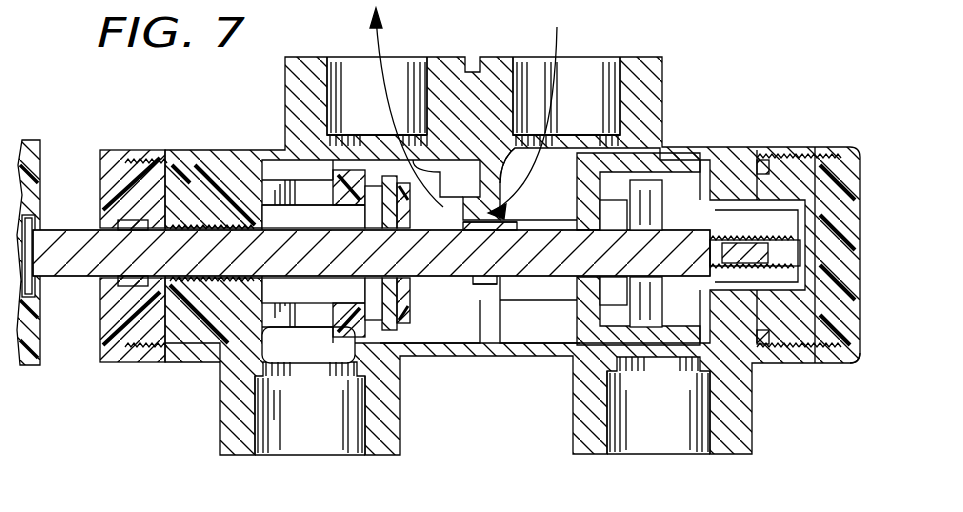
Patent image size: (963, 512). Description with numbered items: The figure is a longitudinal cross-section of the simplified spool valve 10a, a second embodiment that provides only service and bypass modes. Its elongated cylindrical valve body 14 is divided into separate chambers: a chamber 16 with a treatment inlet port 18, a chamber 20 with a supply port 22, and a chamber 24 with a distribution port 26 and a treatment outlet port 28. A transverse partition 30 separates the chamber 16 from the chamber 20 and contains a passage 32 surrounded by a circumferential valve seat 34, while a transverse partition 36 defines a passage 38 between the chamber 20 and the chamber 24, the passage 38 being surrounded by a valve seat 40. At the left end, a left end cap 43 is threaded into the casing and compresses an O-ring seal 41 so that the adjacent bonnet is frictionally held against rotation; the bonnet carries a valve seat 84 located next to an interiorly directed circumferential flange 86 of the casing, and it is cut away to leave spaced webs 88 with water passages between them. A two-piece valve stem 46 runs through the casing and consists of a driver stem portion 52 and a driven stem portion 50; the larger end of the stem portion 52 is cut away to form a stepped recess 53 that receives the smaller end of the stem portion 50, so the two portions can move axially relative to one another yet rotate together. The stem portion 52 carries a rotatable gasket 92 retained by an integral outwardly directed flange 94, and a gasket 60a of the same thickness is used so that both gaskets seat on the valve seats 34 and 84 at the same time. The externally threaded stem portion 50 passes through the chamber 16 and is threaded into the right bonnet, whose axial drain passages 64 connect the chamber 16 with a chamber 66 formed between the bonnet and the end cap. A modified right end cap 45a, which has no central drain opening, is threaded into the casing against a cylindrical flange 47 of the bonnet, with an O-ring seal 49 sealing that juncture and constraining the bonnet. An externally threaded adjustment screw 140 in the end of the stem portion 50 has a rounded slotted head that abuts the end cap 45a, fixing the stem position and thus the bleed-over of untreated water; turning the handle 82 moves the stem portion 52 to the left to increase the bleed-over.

The spool valve 10a is at (240, 150).
The handle 82 is at (40, 142).
The driver stem portion 52 is at (65, 243).
The passage 38 is at (490, 296).
The stepped recess 53 is at (480, 288).
The O-ring seal 41 is at (167, 160).
The left end cap 43 is at (215, 335).
The valve stem 46 is at (288, 262).
The webs 88 is at (300, 205).
The gasket 92 is at (385, 190).
The valve seat 84 is at (352, 175).
The circumferential flange 86 is at (372, 186).
The flange 94 is at (412, 212).
The chamber 24 is at (453, 181).
The valve seat 40 is at (463, 318).
The transverse partition 36 is at (497, 318).
The passage 32 is at (582, 296).
The transverse partition 30 is at (532, 166).
The chamber 20 is at (556, 208).
The gasket 60a is at (645, 165).
The chamber 16 is at (695, 347).
The valve seat 34 is at (605, 308).
The valve body 14 is at (735, 148).
The cylindrical flange 47 is at (762, 165).
The O-ring seal 49 is at (765, 345).
The chamber 66 is at (825, 150).
The right end cap 45a is at (855, 356).
The drain passages 64 is at (722, 210).
The driven stem portion 50 is at (760, 242).
The adjustment screw 140 is at (780, 262).
The distribution port 26 is at (335, 66).
The supply port 22 is at (598, 66).
The treatment outlet port 28 is at (268, 446).
The treatment inlet port 18 is at (706, 440).